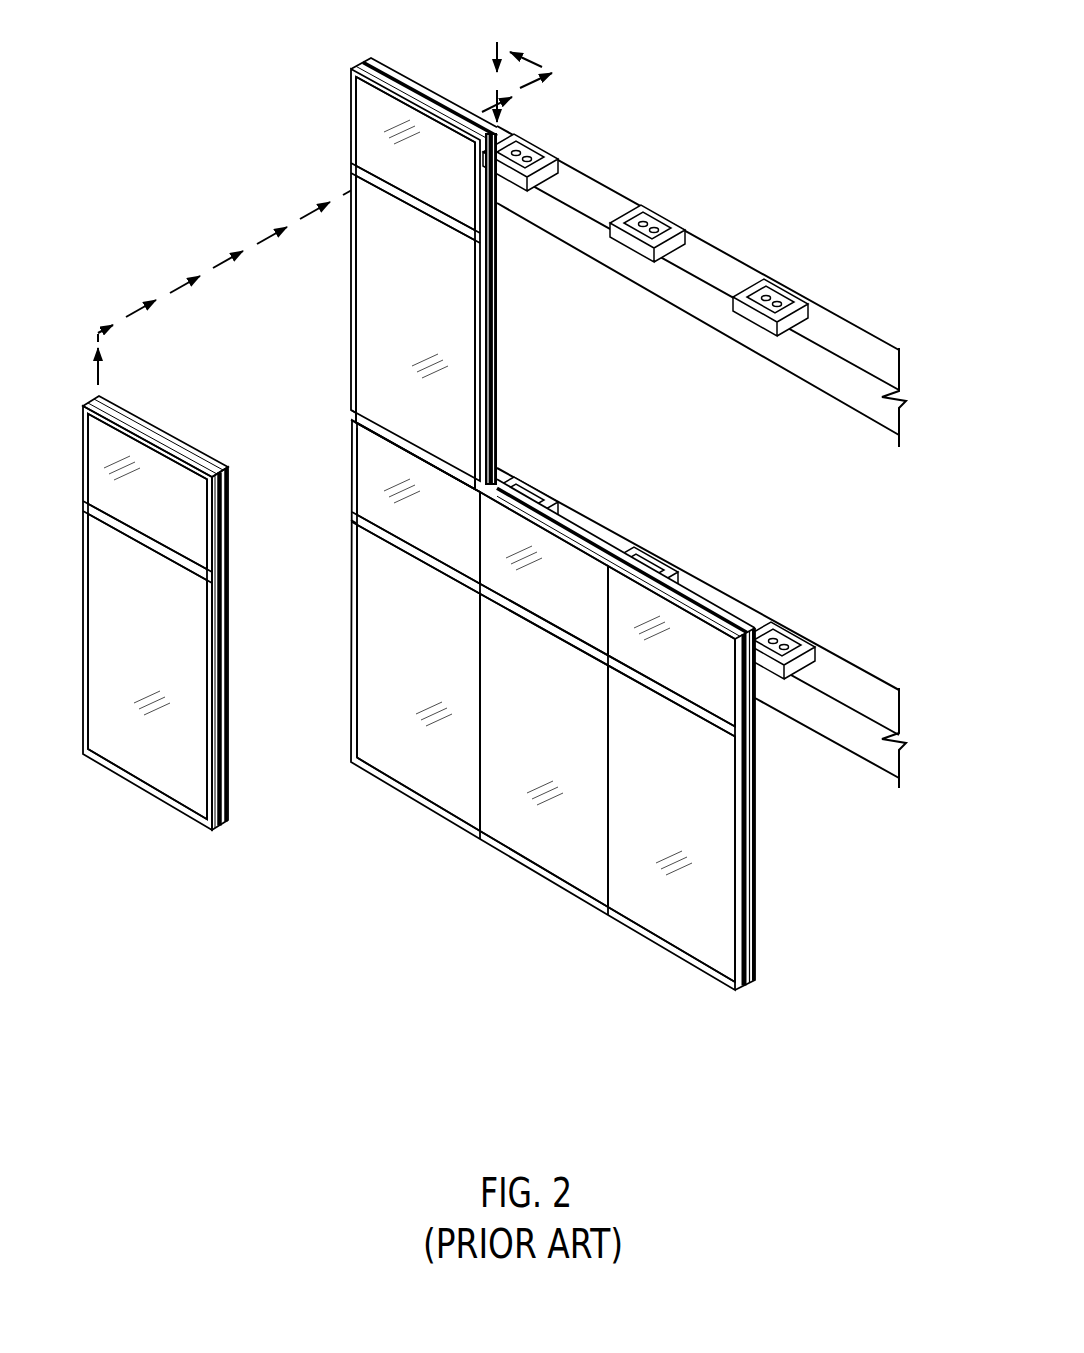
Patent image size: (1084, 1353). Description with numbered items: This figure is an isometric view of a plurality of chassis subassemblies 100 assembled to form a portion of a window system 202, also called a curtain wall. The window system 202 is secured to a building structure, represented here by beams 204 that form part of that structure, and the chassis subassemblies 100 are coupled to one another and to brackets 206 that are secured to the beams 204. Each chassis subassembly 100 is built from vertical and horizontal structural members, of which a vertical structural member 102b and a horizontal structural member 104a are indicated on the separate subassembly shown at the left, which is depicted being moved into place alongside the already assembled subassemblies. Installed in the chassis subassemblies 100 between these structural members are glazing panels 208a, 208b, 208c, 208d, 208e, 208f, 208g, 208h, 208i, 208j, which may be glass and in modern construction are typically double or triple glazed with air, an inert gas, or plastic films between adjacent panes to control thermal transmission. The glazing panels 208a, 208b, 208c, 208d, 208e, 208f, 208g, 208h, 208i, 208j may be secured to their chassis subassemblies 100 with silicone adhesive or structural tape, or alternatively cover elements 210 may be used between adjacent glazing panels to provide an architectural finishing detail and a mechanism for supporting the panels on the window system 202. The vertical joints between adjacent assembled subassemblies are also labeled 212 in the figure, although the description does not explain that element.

The chassis subassembly 100 is at (215, 623).
The vertical structural member 102b is at (228, 623).
The horizontal structural member 104a is at (198, 456).
The window system 202 is at (353, 918).
The beam 204 is at (836, 716).
The bracket 206 is at (782, 314).
The glazing panel 208a is at (463, 184).
The glazing panel 208b is at (435, 280).
The glazing panel 208c is at (189, 514).
The glazing panel 208d is at (160, 614).
The glazing panel 208e is at (464, 530).
The glazing panel 208f is at (433, 624).
The glazing panel 208g is at (587, 601).
The glazing panel 208h is at (558, 697).
The glazing panel 208i is at (709, 675).
The glazing panel 208j is at (682, 769).
The cover element 210 is at (498, 266).
The vertical joint between panels 212 is at (480, 818).